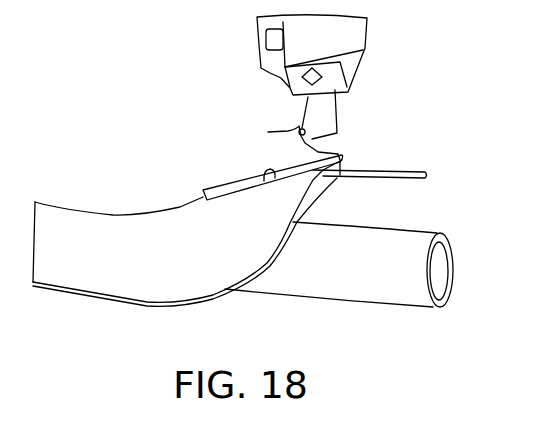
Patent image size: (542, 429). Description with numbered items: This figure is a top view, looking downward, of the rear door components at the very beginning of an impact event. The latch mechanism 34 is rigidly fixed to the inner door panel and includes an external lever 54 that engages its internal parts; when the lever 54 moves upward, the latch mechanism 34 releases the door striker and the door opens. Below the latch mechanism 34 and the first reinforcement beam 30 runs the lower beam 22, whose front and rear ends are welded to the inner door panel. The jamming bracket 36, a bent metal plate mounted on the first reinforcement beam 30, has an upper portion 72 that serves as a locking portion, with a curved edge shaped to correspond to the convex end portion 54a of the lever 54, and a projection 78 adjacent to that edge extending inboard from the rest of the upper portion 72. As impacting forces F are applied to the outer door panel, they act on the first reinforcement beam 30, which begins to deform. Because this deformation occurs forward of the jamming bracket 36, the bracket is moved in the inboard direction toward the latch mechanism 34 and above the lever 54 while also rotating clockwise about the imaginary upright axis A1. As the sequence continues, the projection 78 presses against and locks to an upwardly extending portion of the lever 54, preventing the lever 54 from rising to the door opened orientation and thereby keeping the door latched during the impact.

The lower beam 22 is at (342, 272).
The first reinforcement beam 30 is at (92, 253).
The latch mechanism 34 is at (338, 39).
The jamming bracket 36 is at (218, 165).
The external lever 54 is at (322, 116).
The end portion 54a is at (305, 131).
The upper portion 72 is at (240, 172).
The projection 78 is at (268, 132).
The imaginary upright axis A1 is at (432, 157).
The impacting forces F is at (67, 290).